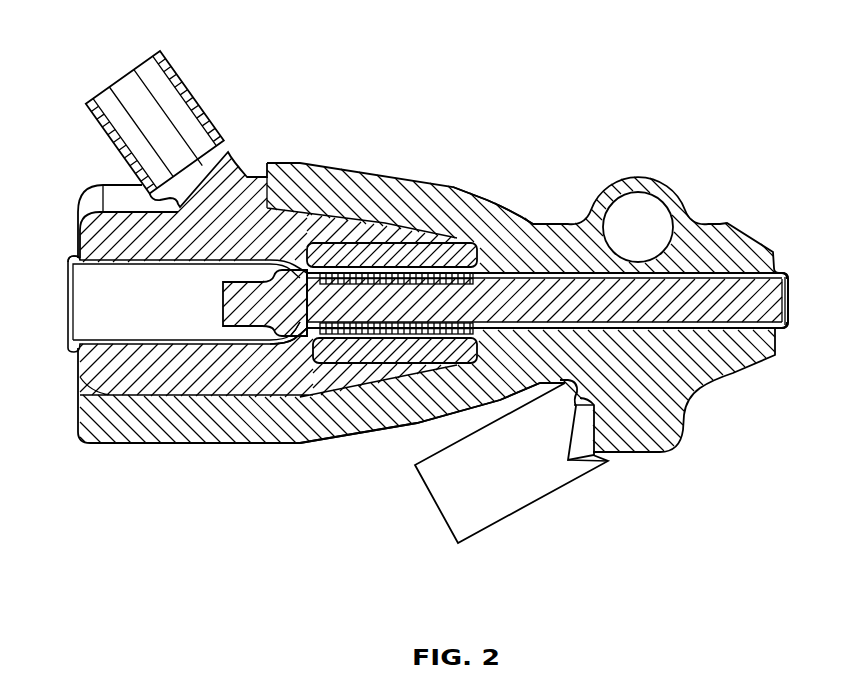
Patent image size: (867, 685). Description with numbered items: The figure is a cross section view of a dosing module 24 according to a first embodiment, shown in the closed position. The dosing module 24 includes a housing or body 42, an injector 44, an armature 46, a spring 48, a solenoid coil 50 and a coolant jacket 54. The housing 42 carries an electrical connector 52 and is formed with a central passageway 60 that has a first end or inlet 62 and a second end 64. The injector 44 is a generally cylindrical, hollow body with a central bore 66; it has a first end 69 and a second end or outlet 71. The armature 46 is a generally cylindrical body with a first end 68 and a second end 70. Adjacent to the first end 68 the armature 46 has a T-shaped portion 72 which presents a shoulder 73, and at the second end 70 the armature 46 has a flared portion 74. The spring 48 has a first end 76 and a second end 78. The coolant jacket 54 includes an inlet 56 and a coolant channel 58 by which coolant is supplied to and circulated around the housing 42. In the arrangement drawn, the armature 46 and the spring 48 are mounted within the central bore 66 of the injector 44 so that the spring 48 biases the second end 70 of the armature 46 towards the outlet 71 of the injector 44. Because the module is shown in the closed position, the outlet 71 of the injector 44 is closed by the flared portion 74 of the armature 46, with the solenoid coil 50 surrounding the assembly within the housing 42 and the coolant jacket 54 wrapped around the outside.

The dosing module 24 is at (617, 72).
The housing 42 is at (125, 382).
The injector 44 is at (703, 276).
The armature 46 is at (552, 293).
The spring 48 is at (370, 327).
The solenoid coil 50 is at (417, 253).
The electrical connector 52 is at (155, 74).
The coolant jacket 54 is at (220, 435).
The inlet 56 is at (503, 498).
The coolant channel 58 is at (638, 213).
The central passageway 60 is at (192, 293).
The inlet 62 is at (68, 330).
The second end 64 is at (480, 267).
The central bore 66 is at (740, 276).
The first end 68 is at (238, 297).
The first end 69 is at (68, 263).
The second end 70 is at (790, 293).
The outlet 71 is at (790, 315).
The T-shaped portion 72 is at (293, 297).
The shoulder 73 is at (315, 340).
The flared portion 74 is at (777, 281).
The first end 76 is at (323, 277).
The second end 78 is at (457, 365).